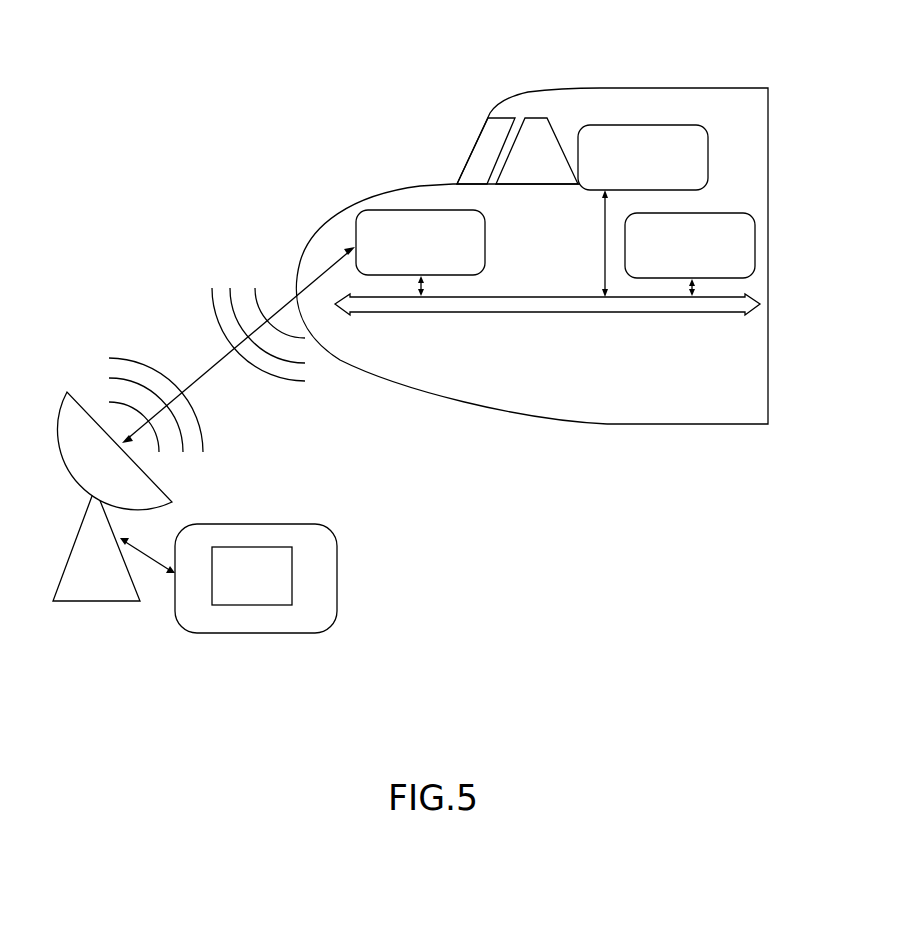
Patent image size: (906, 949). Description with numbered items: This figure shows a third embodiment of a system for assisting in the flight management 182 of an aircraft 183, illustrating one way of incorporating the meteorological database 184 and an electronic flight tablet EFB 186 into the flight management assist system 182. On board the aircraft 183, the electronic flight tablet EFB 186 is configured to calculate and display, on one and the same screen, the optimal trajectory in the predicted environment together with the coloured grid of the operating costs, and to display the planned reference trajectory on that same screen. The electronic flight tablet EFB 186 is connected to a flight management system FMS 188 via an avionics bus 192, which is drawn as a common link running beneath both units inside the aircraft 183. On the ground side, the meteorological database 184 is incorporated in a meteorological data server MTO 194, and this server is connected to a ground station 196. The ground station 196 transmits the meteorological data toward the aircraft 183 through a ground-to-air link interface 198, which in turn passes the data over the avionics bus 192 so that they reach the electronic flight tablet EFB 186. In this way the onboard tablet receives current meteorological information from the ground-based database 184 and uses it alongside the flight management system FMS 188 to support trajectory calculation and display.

The flight management assist system 182 is at (221, 82).
The aircraft 183 is at (593, 88).
The meteorological database 184 is at (232, 587).
The electronic flight tablet EFB 186 is at (678, 125).
The flight management system FMS 188 is at (727, 213).
The avionics bus 192 is at (400, 305).
The meteorological data server MTO 194 is at (252, 633).
The ground station 196 is at (102, 602).
The ground-to-air link interface 198 is at (388, 210).